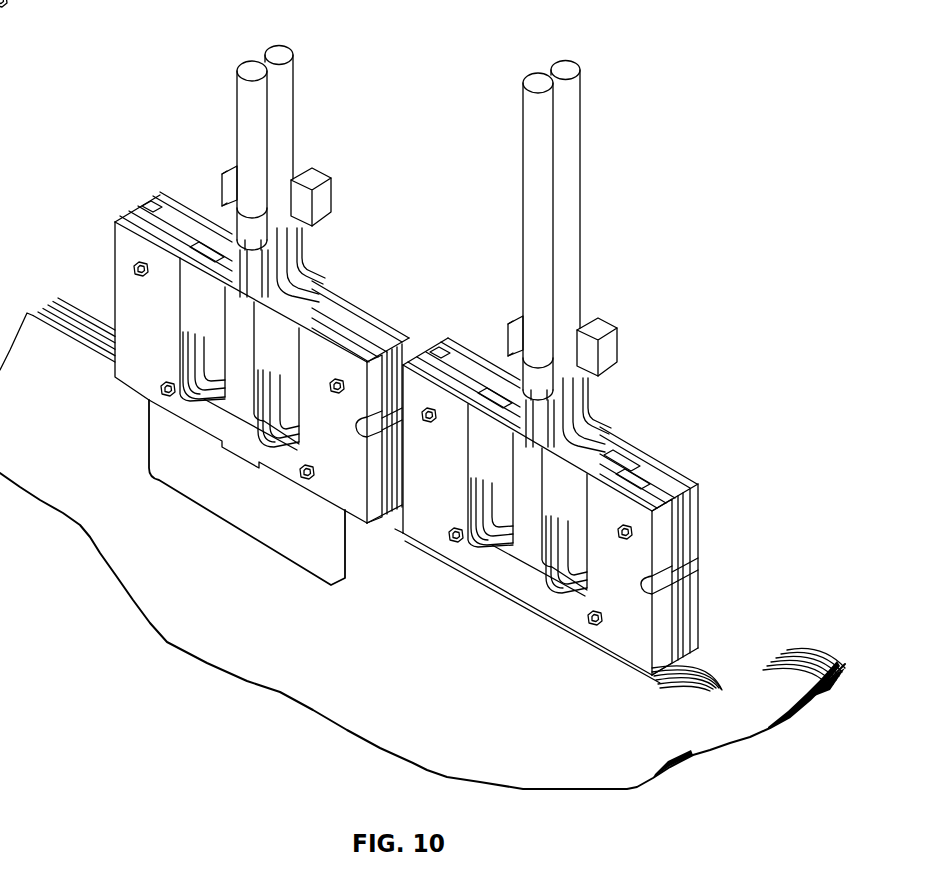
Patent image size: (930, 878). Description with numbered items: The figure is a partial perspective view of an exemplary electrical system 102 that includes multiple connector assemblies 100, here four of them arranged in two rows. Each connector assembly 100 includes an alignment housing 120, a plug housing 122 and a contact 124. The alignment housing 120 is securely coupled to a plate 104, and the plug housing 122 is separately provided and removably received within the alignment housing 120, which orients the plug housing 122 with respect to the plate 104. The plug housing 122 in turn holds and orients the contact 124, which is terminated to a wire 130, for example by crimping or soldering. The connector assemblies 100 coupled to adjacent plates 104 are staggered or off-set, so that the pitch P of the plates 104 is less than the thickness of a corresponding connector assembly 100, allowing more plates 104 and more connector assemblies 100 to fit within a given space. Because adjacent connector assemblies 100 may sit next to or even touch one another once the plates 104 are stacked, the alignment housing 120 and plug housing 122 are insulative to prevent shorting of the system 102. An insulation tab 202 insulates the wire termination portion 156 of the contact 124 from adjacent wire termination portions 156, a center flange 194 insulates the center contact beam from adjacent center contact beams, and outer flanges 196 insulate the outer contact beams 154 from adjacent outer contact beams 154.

The connector assembly 100 is at (127, 39).
The electrical system 102 is at (124, 181).
The plate 104 is at (763, 683).
The alignment housing 120 is at (673, 480).
The plug housing 122 is at (621, 447).
The contact 124 is at (603, 447).
The wire 130 is at (570, 219).
The outer contact beam 154 is at (510, 591).
The wire termination portion 156 is at (506, 340).
The center flange 194 is at (521, 538).
The outer flange 196 is at (537, 611).
The insulation tab 202 is at (604, 350).
The pitch P is at (652, 692).